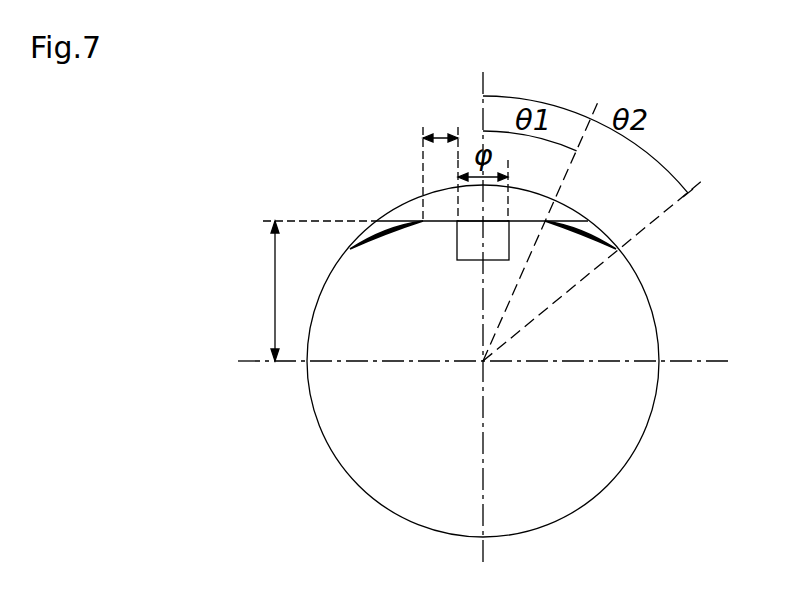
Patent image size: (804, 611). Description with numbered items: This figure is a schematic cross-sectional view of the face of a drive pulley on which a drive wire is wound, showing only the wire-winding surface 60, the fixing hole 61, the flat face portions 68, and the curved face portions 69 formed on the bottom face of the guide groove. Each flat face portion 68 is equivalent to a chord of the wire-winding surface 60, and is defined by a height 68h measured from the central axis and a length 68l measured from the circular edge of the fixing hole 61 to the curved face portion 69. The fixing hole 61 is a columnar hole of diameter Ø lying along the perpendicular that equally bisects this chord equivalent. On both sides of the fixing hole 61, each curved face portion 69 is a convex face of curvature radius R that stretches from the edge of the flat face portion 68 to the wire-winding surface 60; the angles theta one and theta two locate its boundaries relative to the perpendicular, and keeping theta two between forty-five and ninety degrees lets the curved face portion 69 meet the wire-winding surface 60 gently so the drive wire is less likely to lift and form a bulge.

The wire-winding surface 60 is at (378, 507).
The fixing hole 61 is at (473, 248).
The flat face portion 68 is at (443, 225).
The curved face portion 69 is at (403, 225).
The height of flat face portion 68h is at (298, 291).
The length of flat face portion 68l is at (440, 158).